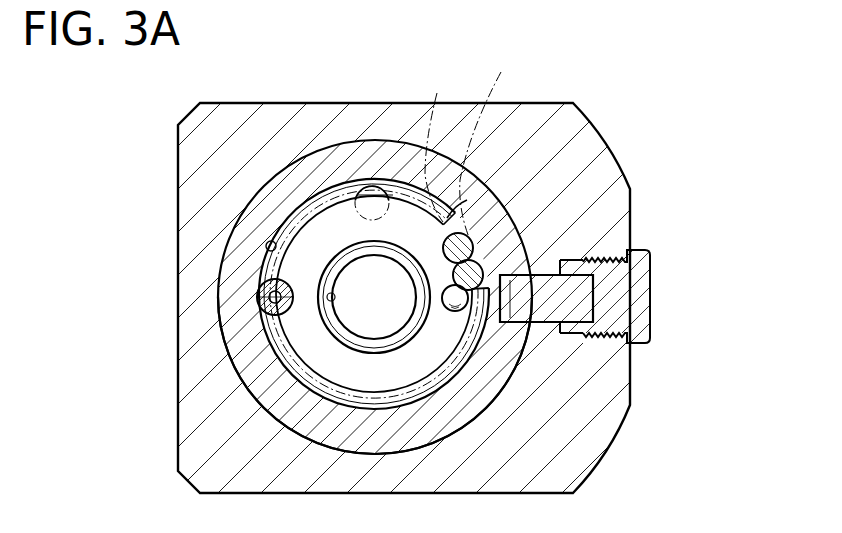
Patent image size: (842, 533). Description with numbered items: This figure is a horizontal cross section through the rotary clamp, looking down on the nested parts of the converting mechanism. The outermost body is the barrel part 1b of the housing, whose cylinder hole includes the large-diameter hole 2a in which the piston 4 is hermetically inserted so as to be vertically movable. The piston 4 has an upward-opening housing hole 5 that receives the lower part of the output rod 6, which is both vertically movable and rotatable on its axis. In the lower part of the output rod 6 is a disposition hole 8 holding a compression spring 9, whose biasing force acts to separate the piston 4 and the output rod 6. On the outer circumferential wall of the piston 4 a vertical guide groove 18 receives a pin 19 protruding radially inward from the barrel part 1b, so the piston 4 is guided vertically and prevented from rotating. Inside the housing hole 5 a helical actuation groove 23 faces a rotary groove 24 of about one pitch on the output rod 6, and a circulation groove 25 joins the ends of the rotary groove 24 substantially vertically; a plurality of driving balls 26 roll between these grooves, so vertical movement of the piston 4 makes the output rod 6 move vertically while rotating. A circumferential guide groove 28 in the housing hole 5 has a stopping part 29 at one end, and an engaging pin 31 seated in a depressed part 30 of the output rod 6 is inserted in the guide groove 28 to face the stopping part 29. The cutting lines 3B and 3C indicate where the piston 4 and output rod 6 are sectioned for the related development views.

The barrel part 1b is at (565, 138).
The large-diameter hole 2a is at (487, 373).
The piston 4 is at (505, 342).
The housing hole 5 is at (312, 348).
The output rod 6 is at (300, 332).
The disposition hole 8 is at (408, 324).
The compression spring 9 is at (334, 313).
The guide groove 18 is at (555, 308).
The pin 19 is at (580, 293).
The actuation groove 23 is at (465, 223).
The rotary groove 24 is at (480, 242).
The circulation groove 25 is at (484, 268).
The driving balls 26 is at (476, 195).
The guide groove 28 is at (267, 245).
The stopping part 29 is at (370, 192).
The depressed part 30 is at (257, 298).
The engaging pin 31 is at (262, 284).
The line 3B is at (449, 137).
The line 3C is at (498, 136).